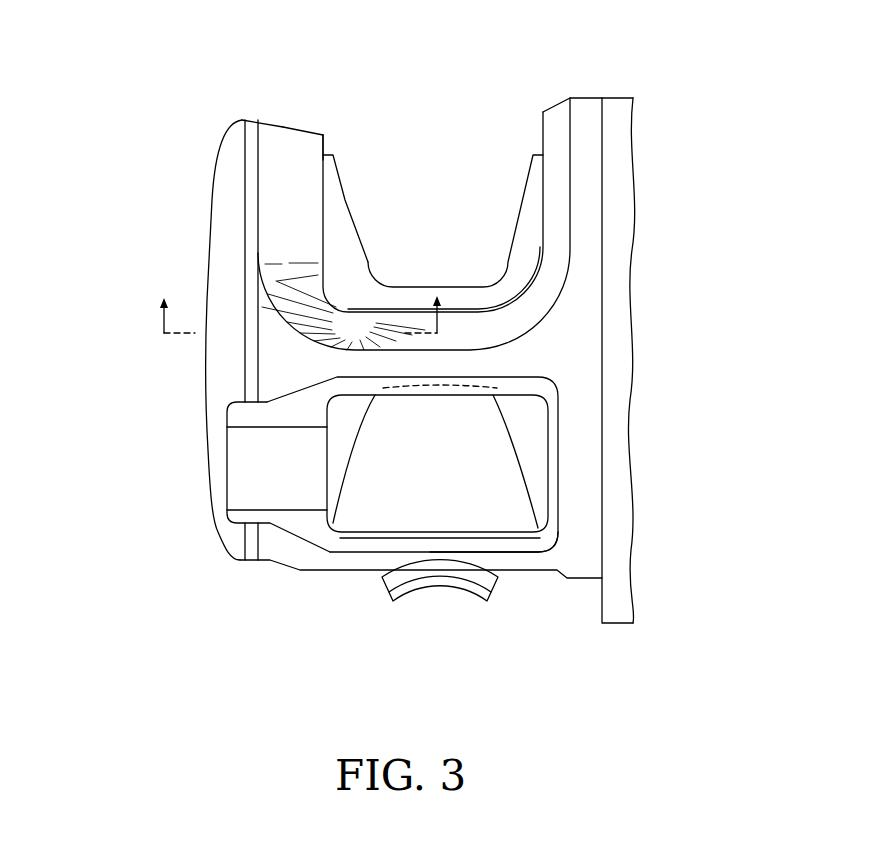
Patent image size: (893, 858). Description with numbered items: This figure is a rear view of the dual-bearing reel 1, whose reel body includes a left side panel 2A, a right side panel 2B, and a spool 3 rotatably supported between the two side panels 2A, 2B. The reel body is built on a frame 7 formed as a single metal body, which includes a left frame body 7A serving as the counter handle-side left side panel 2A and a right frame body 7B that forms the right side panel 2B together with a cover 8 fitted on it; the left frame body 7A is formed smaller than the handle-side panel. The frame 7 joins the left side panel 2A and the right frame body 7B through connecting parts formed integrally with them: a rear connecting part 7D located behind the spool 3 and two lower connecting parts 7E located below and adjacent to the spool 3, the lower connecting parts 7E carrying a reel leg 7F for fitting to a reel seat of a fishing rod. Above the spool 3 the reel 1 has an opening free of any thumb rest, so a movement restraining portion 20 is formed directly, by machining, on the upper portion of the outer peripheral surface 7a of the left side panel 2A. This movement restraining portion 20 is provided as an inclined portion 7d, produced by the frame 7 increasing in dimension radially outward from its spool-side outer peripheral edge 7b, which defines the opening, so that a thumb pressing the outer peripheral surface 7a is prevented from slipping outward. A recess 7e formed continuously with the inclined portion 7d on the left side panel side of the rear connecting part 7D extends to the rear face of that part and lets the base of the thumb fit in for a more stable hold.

The dual-bearing reel 1 is at (650, 78).
The left side panel 2A is at (268, 340).
The right side panel 2B is at (707, 224).
The spool 3 is at (356, 283).
The frame 7 is at (578, 592).
The left frame body 7A is at (220, 376).
The right frame body 7B is at (584, 236).
The rear connecting part 7D is at (432, 358).
The lower connecting part 7E is at (498, 546).
The reel leg 7F is at (440, 582).
The outer peripheral surface 7a is at (298, 128).
The spool-side outer peripheral edge 7b is at (323, 134).
The inclined portion 7d is at (276, 120).
The recess 7e is at (327, 320).
The cover 8 is at (617, 282).
The movement restraining portion 20 is at (266, 113).